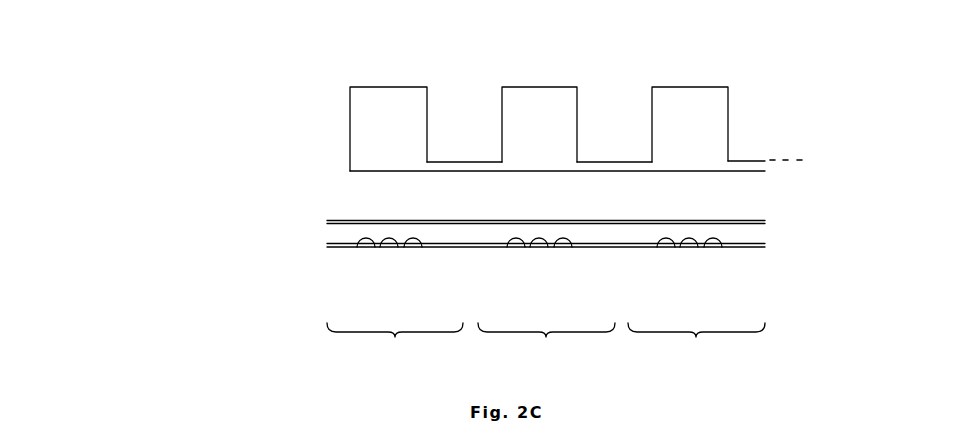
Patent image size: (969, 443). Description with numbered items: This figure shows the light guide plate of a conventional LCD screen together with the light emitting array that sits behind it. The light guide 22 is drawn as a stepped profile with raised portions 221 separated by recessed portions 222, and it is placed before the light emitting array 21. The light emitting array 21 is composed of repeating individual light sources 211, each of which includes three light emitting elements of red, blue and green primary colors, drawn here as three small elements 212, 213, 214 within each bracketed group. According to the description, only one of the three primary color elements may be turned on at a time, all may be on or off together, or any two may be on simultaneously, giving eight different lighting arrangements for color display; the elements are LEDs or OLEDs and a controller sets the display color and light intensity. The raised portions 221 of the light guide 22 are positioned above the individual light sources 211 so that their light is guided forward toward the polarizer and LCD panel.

The light emitting array 21 is at (338, 237).
The individual light source 211 is at (546, 341).
The first sub-pixel 212 is at (360, 248).
The second sub-pixel 213 is at (391, 248).
The third sub-pixel 214 is at (414, 243).
The light guide 22 is at (537, 98).
The protrusion 221 is at (350, 127).
The recess 222 is at (460, 168).